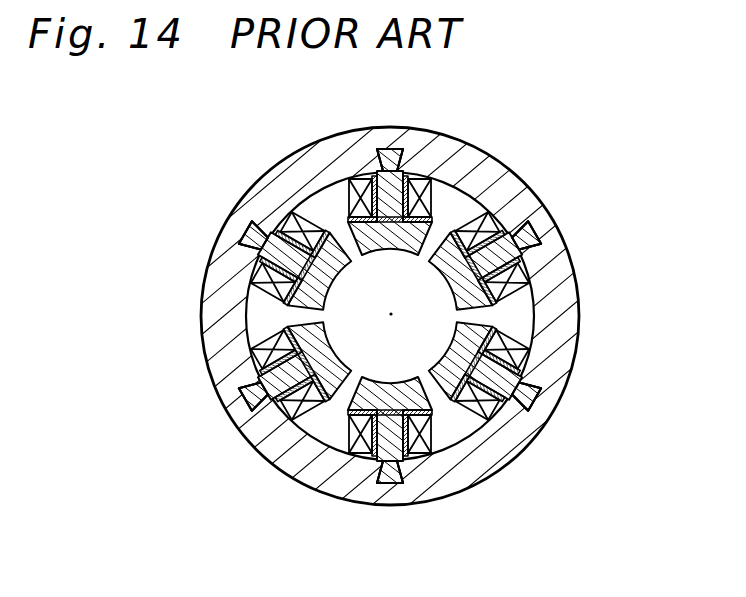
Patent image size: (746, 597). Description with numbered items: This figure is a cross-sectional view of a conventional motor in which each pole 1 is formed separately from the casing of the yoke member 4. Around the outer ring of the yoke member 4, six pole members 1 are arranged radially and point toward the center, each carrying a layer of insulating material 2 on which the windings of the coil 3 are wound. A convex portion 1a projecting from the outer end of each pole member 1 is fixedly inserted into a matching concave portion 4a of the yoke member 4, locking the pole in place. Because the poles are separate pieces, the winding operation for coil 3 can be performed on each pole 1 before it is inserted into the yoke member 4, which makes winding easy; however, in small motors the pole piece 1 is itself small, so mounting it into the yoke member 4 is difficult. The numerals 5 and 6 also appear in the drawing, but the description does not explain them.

The pole 1 is at (388, 202).
The convex portion 1a is at (390, 160).
The layer of insulating material 2 is at (480, 237).
The coil 3 is at (507, 293).
The yoke member 4 is at (223, 375).
The concave portion 4a is at (378, 158).
The gap between pole shoes 5 is at (440, 390).
The rotor center axis 6 is at (395, 309).